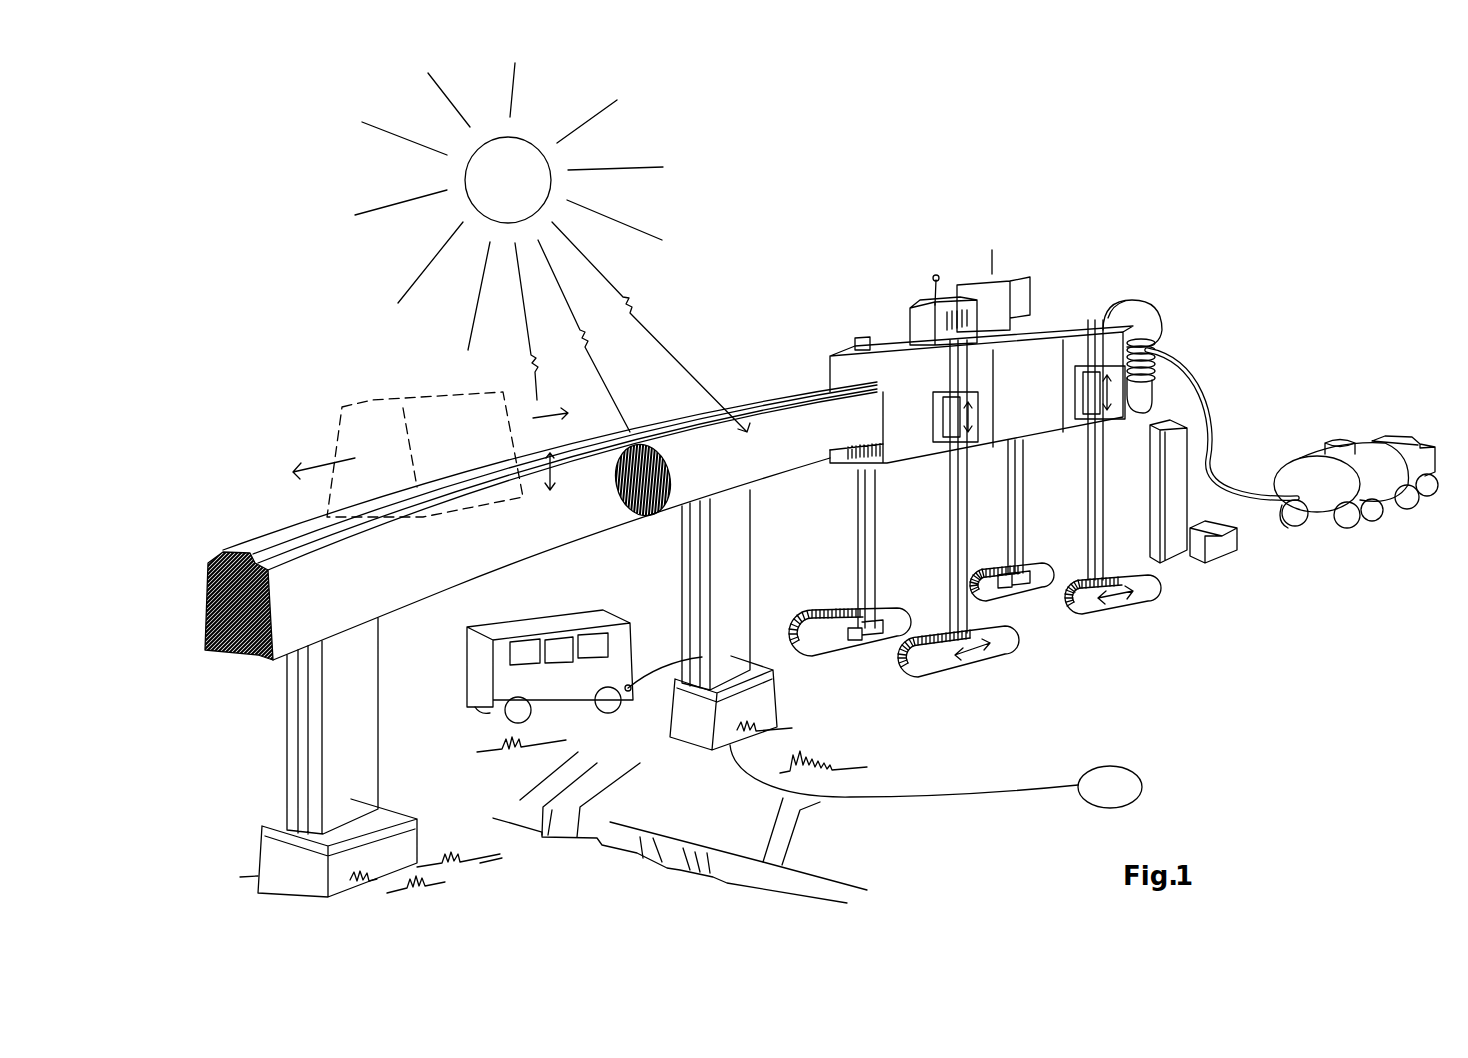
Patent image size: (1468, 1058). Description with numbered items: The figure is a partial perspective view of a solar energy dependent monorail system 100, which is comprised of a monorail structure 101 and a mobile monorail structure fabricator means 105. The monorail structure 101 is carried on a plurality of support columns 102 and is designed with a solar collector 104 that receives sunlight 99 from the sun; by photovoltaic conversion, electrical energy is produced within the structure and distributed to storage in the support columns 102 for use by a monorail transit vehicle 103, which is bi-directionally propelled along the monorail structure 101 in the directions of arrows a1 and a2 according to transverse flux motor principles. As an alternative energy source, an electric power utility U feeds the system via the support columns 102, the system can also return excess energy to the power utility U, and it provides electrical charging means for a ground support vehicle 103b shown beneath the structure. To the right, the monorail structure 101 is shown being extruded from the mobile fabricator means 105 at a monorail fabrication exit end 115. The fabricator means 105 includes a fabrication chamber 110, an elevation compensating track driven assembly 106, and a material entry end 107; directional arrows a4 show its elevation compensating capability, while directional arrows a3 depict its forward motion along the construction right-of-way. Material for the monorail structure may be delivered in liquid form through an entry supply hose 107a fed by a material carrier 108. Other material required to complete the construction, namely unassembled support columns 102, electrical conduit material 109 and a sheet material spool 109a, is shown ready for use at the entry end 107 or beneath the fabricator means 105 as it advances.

The sunlight 99 is at (650, 322).
The solar energy dependent monorail system 100 is at (335, 162).
The monorail structure 101 is at (447, 597).
The support columns 102 is at (385, 732).
The monorail transit vehicle 103 is at (372, 400).
The ground support vehicle 103b is at (507, 632).
The solar collector 104 is at (648, 510).
The mobile monorail structure fabricator means 105 is at (1190, 672).
The elevation compensating track driven assembly 106 is at (1022, 653).
The material entry end 107 is at (1130, 333).
The entry supply hose 107a is at (1212, 415).
The material carrier 108 is at (1362, 443).
The electrical conduit material 109 is at (1145, 387).
The sheet material spool 109a is at (1147, 307).
The fabrication chamber 110 is at (1040, 356).
The monorail fabrication exit end 115 is at (744, 344).
The directional arrow a1 is at (540, 444).
The directional arrow a2 is at (324, 457).
The directional arrows a3 is at (978, 652).
The directional arrows a4 is at (953, 438).
The electric power utility U is at (936, 776).